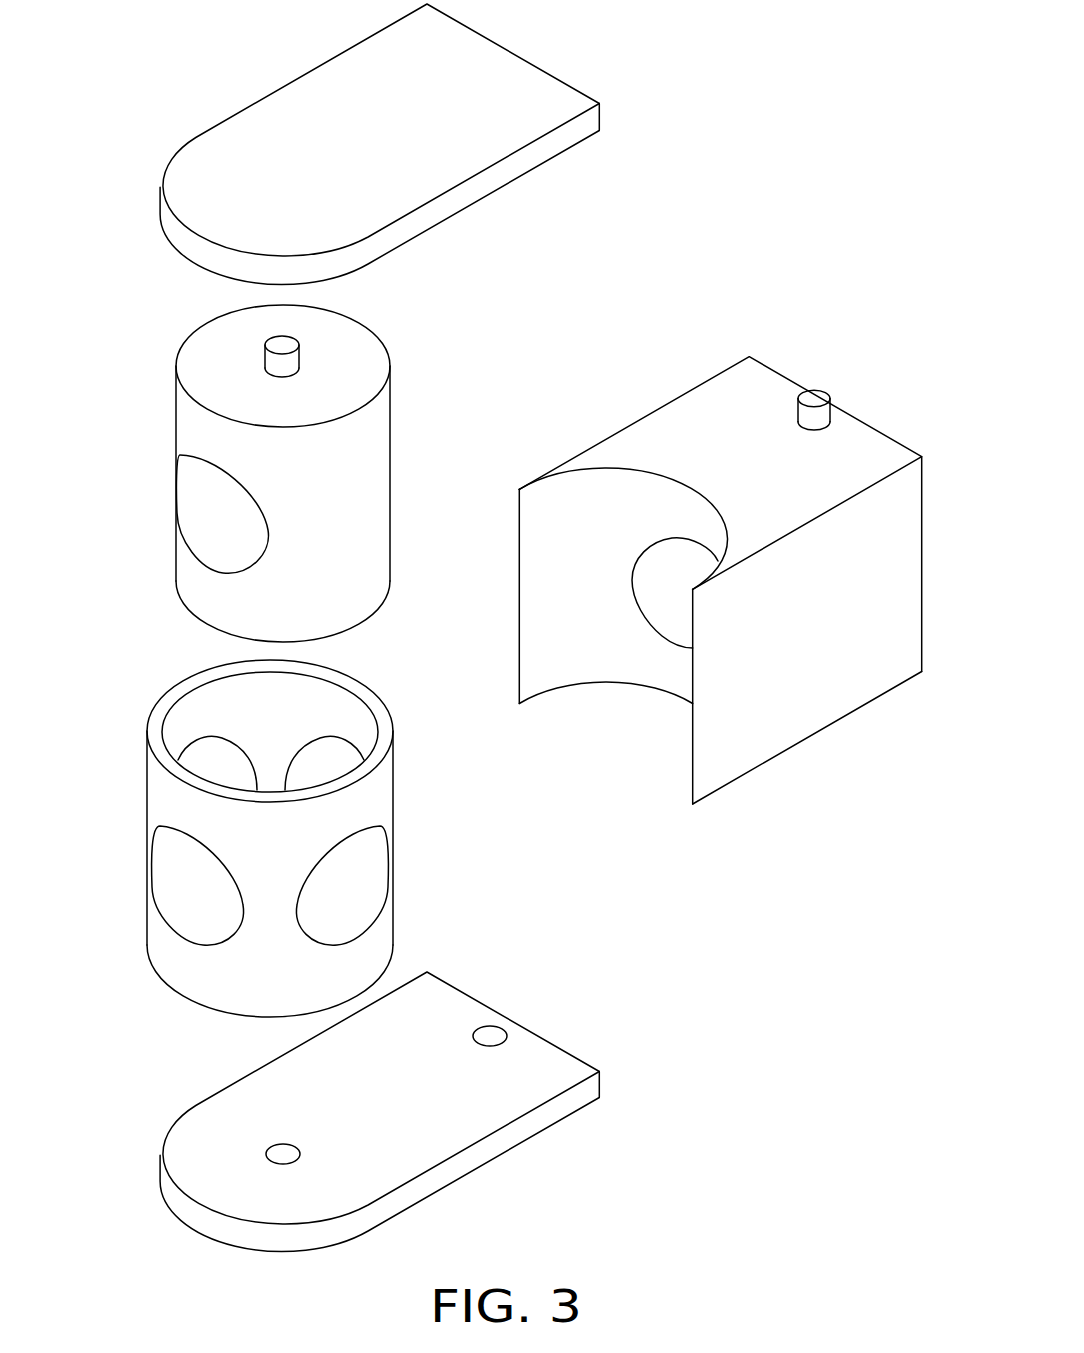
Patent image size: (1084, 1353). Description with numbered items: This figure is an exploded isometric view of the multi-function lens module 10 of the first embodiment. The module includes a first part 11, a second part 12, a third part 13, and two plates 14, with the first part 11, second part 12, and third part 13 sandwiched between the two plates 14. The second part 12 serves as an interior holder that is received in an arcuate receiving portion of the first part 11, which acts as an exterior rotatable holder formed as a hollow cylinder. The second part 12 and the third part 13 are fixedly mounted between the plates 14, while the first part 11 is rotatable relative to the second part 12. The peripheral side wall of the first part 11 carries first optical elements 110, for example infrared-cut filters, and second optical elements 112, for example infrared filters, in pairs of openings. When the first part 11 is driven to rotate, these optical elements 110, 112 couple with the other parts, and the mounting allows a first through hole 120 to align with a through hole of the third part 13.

The multi-function lens module 10 is at (497, 626).
The first part 11 is at (173, 700).
The first optical elements 110 is at (175, 868).
The second optical elements 112 is at (356, 877).
The second part 12 is at (202, 363).
The first through hole 120 is at (202, 507).
The third part 13 is at (707, 410).
The plates 14 is at (527, 97).